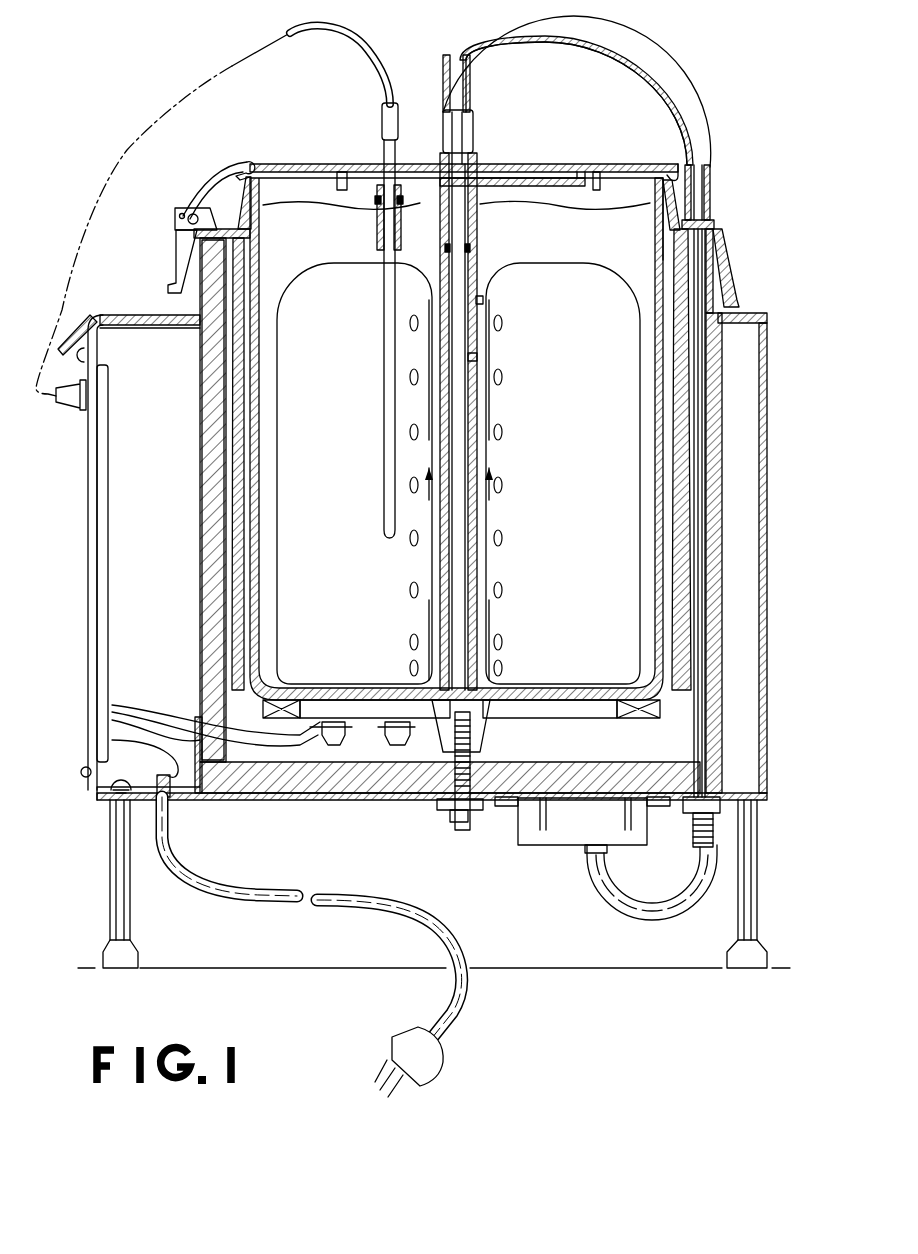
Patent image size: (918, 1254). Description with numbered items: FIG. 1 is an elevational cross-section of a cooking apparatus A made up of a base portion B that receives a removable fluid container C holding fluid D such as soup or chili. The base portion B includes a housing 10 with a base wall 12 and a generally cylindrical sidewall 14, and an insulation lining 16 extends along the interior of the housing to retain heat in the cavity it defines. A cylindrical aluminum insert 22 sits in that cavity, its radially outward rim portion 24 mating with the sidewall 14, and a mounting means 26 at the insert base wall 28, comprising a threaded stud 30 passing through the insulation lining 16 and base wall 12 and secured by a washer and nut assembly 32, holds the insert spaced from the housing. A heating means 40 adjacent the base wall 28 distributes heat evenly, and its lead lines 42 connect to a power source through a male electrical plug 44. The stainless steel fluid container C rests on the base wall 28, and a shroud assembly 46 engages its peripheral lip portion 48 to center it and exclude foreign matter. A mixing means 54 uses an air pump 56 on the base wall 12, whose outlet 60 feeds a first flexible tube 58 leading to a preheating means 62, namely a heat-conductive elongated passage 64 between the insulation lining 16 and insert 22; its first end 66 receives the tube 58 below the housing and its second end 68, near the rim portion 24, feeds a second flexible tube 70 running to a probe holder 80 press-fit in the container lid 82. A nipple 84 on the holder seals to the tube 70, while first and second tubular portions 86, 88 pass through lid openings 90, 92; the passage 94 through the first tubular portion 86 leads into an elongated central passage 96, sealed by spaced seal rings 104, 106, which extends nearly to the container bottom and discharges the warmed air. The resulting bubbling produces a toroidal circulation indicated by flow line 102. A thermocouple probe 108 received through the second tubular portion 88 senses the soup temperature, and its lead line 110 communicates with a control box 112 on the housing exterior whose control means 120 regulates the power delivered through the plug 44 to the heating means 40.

The cooking apparatus A is at (206, 62).
The base portion B is at (363, 803).
The fluid container C is at (655, 493).
The fluid D is at (622, 277).
The housing 10 is at (283, 803).
The base wall 12 is at (322, 800).
The sidewall 14 is at (200, 425).
The insulation lining 16 is at (210, 488).
The insert 22 is at (238, 548).
The rim portion 24 is at (250, 237).
The mounting means 26 is at (497, 730).
The base wall of insert 28 is at (557, 700).
The threaded stud 30 is at (470, 763).
The washer and nut assembly 32 is at (440, 810).
The heating means 40 is at (357, 712).
The lead lines 42 is at (243, 748).
The male electrical plug 44 is at (463, 1005).
The shroud assembly 46 is at (240, 198).
The peripheral lip portion 48 is at (253, 170).
The mixing means 54 is at (733, 493).
The air pump 56 is at (530, 827).
The first flexible tube 58 is at (603, 882).
The pump outlet 60 is at (588, 848).
The preheating means 62 is at (702, 545).
The elongated passage 64 is at (695, 433).
The first end 66 is at (700, 773).
The second end 68 is at (717, 218).
The second flexible tube 70 is at (592, 38).
The probe holder 80 is at (545, 150).
The container lid 82 is at (618, 163).
The nipple 84 is at (473, 125).
The first tubular portion 86 is at (468, 232).
The second tubular portion 88 is at (377, 217).
The opening 90 is at (477, 187).
The opening 92 is at (402, 186).
The passage 94 is at (483, 300).
The elongated central passage 96 is at (473, 357).
The flow line 102 is at (278, 330).
The seal ring 104 is at (420, 180).
The seal ring 106 is at (467, 250).
The probe 108 is at (392, 400).
The lead line 110 is at (353, 33).
The control box 112 is at (86, 650).
The control means 120 is at (105, 567).